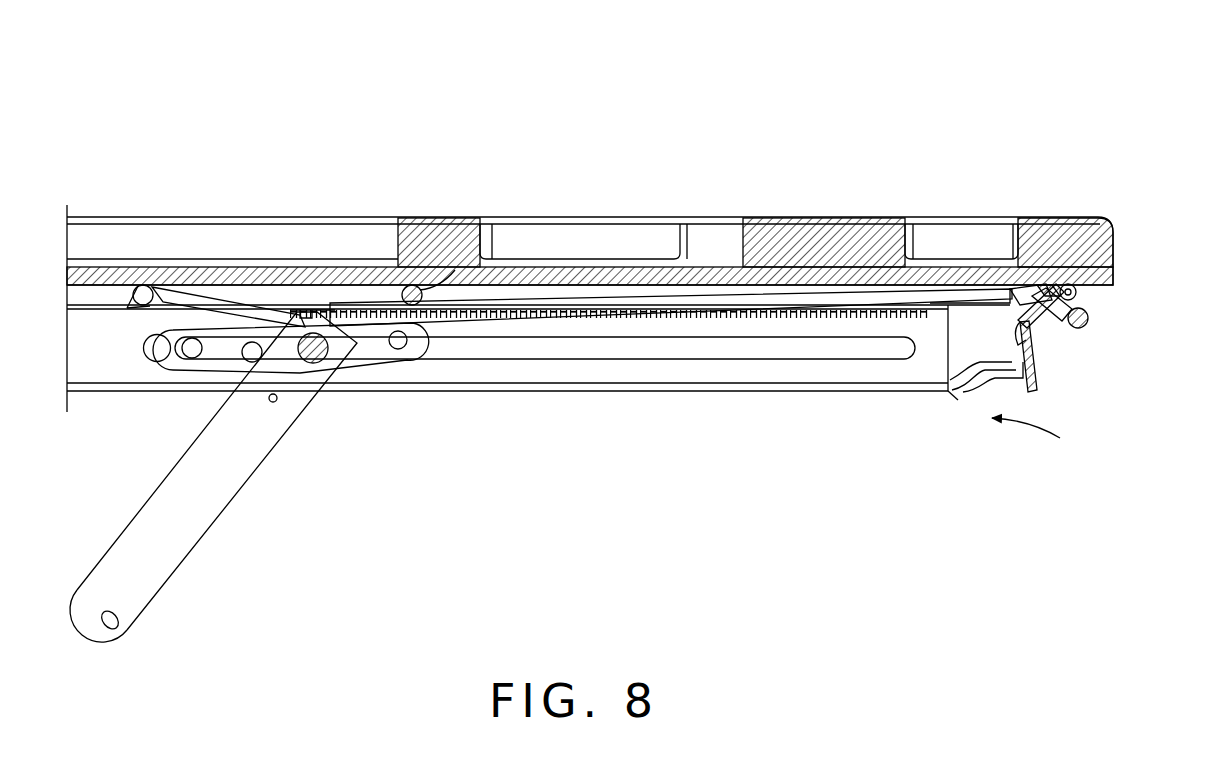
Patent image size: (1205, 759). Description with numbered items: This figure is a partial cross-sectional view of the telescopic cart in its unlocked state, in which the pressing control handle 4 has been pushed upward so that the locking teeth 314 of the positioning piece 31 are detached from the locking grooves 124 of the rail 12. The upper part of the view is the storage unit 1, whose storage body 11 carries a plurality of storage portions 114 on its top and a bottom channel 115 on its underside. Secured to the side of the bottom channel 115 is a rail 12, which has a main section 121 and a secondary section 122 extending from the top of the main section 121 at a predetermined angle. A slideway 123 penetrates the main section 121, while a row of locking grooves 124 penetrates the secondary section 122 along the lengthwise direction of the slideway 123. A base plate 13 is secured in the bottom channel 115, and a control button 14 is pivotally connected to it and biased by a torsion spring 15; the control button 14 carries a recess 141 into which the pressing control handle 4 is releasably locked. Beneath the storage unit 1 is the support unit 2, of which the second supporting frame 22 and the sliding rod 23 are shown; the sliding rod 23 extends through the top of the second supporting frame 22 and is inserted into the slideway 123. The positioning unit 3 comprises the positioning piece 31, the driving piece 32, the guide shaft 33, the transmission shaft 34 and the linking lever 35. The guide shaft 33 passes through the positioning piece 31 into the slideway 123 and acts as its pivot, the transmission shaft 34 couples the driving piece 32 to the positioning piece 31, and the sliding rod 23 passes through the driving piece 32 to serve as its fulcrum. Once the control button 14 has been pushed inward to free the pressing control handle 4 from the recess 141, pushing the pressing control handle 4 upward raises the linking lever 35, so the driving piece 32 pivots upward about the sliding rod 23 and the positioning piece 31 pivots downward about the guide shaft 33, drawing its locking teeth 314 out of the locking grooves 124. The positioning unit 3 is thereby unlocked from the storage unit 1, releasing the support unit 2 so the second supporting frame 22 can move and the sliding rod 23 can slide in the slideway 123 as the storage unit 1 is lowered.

The storage unit 1 is at (1132, 126).
The storage body 11 is at (1093, 218).
The storage portions 114 is at (587, 238).
The bottom channel 115 is at (986, 351).
The rail 12 is at (706, 480).
The main section 121 is at (715, 373).
The secondary section 122 is at (928, 305).
The slideway 123 is at (796, 352).
The locking grooves 124 is at (880, 317).
The base plate 13 is at (1032, 290).
The control button 14 is at (1037, 388).
The recess 141 is at (1047, 343).
The torsion spring 15 is at (1077, 292).
The support unit 2 is at (310, 591).
The second supporting frame 22 is at (180, 547).
The sliding rod 23 is at (315, 362).
The positioning unit 3 is at (150, 112).
The positioning piece 31 is at (213, 327).
The locking tooth 314 is at (330, 300).
The driving piece 32 is at (380, 300).
The guide shaft 33 is at (152, 268).
The transmission shaft 34 is at (245, 330).
The linking lever 35 is at (456, 265).
The pressing control handle 4 is at (1090, 378).